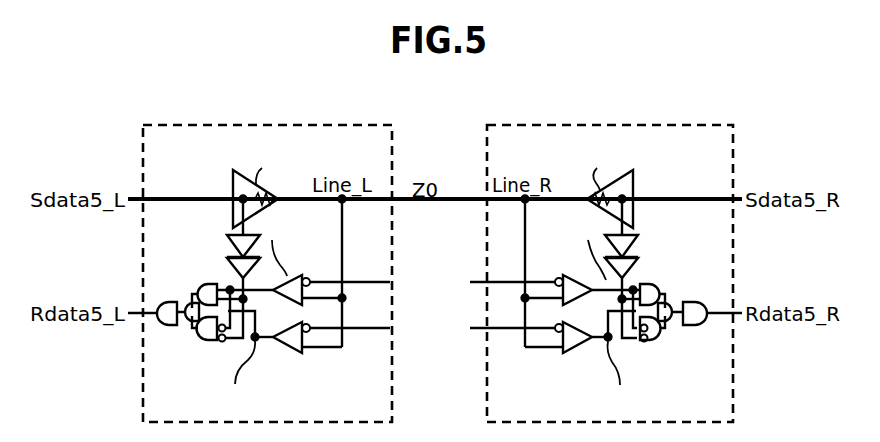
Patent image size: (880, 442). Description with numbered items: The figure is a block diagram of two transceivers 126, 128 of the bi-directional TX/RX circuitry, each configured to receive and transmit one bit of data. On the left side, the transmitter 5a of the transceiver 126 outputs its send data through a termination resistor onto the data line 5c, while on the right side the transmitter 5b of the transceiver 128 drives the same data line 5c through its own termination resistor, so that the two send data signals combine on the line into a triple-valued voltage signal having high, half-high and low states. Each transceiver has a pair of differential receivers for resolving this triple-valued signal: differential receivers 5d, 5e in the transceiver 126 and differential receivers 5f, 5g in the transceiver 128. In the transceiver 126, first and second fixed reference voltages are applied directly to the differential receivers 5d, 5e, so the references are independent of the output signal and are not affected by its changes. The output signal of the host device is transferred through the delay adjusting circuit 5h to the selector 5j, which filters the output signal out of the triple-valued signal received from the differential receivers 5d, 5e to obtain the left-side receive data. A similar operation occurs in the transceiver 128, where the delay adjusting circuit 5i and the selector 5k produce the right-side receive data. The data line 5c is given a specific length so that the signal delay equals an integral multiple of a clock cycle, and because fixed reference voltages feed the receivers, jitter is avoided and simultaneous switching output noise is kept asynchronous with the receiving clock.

The transceiver 126 is at (242, 125).
The transceiver 128 is at (582, 125).
The transmitter 5a is at (233, 183).
The transmitter 5b is at (636, 185).
The data line 5c is at (410, 201).
The differential receiver 5d is at (313, 262).
The differential receiver 5e is at (310, 357).
The differential receiver 5f is at (542, 262).
The differential receiver 5g is at (553, 357).
The delay adjusting circuit 5h is at (227, 237).
The delay adjusting circuit 5i is at (638, 237).
The selector 5j is at (227, 347).
The selector 5k is at (707, 347).